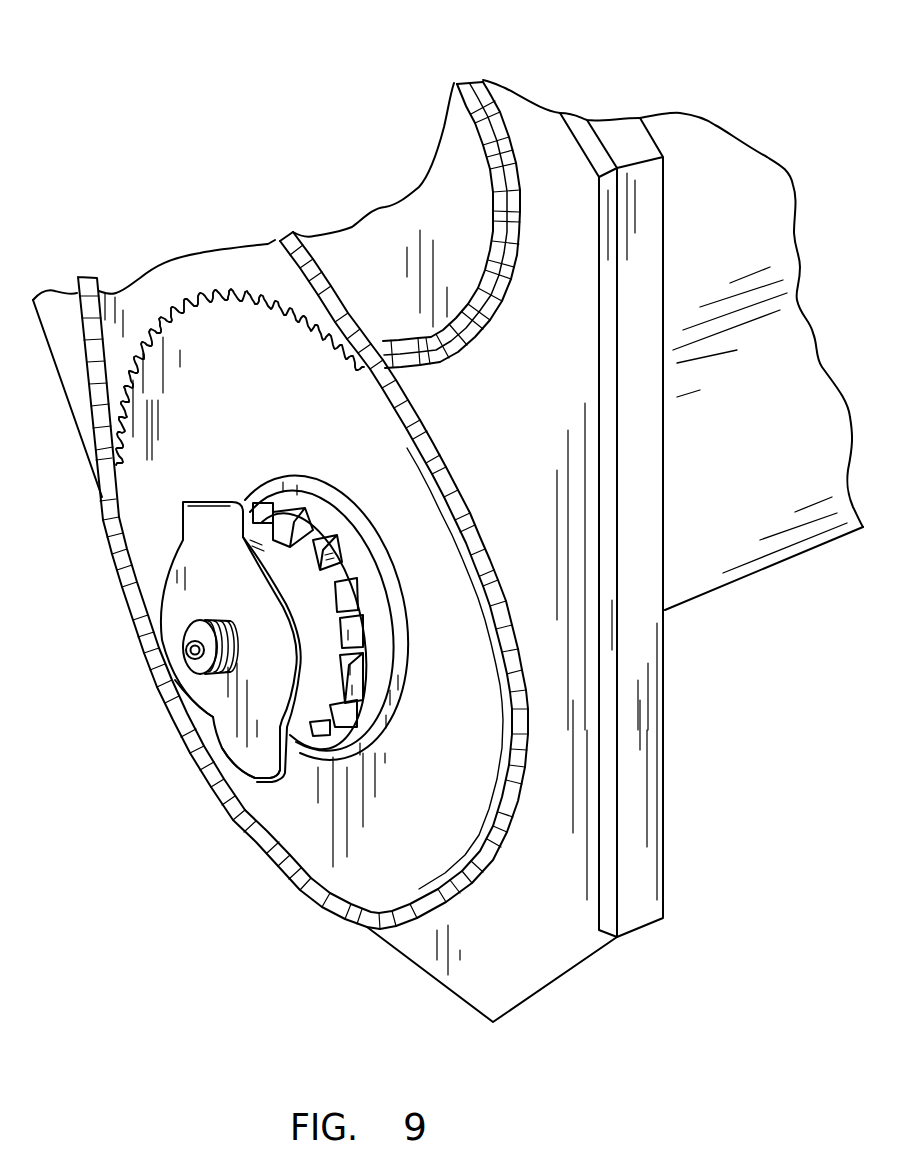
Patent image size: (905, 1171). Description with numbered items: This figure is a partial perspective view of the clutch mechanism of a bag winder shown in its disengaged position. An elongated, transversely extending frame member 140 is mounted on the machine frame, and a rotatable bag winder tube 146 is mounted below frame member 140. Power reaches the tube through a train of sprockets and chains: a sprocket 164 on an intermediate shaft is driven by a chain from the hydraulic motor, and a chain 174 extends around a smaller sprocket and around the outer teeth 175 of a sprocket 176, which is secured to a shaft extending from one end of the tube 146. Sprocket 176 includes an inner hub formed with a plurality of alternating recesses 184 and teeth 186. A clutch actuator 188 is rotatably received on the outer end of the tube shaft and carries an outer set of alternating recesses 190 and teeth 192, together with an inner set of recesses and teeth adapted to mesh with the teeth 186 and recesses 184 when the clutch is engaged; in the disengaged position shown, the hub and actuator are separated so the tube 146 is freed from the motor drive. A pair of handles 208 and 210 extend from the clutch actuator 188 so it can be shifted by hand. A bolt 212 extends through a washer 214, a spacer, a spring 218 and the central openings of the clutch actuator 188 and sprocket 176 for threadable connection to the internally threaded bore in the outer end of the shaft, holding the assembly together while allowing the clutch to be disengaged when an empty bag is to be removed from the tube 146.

The frame member 140 is at (712, 133).
The bag winder tube 146 is at (775, 469).
The sprocket 164 is at (467, 229).
The chain 174 is at (427, 443).
The outer teeth 175 is at (195, 300).
The sprocket 176 is at (430, 850).
The recesses 184 is at (270, 522).
The teeth 186 is at (347, 592).
The clutch actuator 188 is at (213, 733).
The recesses 190 is at (267, 492).
The teeth 192 is at (330, 592).
The handle 208 is at (202, 513).
The handle 210 is at (257, 773).
The bolt 212 is at (183, 647).
The washer 214 is at (203, 667).
The spring 218 is at (220, 618).